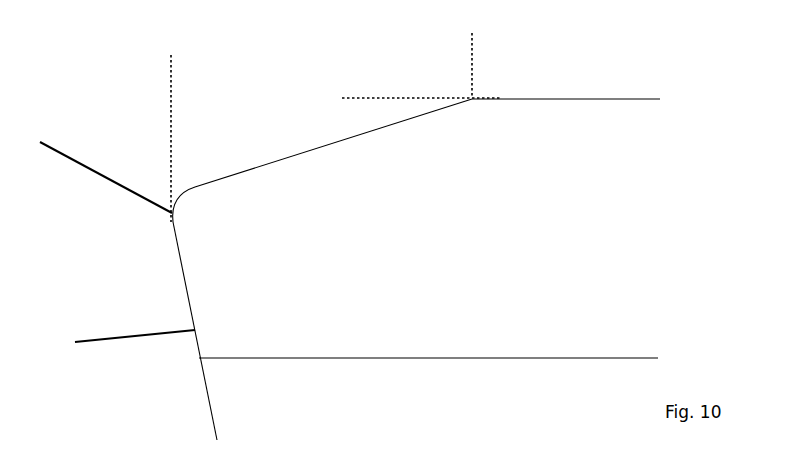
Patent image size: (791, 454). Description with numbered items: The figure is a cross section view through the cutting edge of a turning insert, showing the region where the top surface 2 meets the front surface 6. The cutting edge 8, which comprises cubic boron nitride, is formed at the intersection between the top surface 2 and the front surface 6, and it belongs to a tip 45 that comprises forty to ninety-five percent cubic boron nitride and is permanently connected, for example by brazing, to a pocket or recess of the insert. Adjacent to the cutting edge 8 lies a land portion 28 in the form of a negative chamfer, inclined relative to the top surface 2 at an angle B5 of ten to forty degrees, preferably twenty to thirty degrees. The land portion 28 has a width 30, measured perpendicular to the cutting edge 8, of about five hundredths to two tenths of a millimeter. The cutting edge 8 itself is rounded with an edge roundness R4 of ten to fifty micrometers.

The top surface 2 is at (595, 100).
The front surface 6 is at (122, 333).
The cutting edge 8 is at (103, 157).
The land portion 28 is at (310, 140).
The width 30 is at (470, 62).
The tip 45 is at (415, 331).
The edge roundness R4 is at (179, 197).
The angle B5 is at (365, 132).